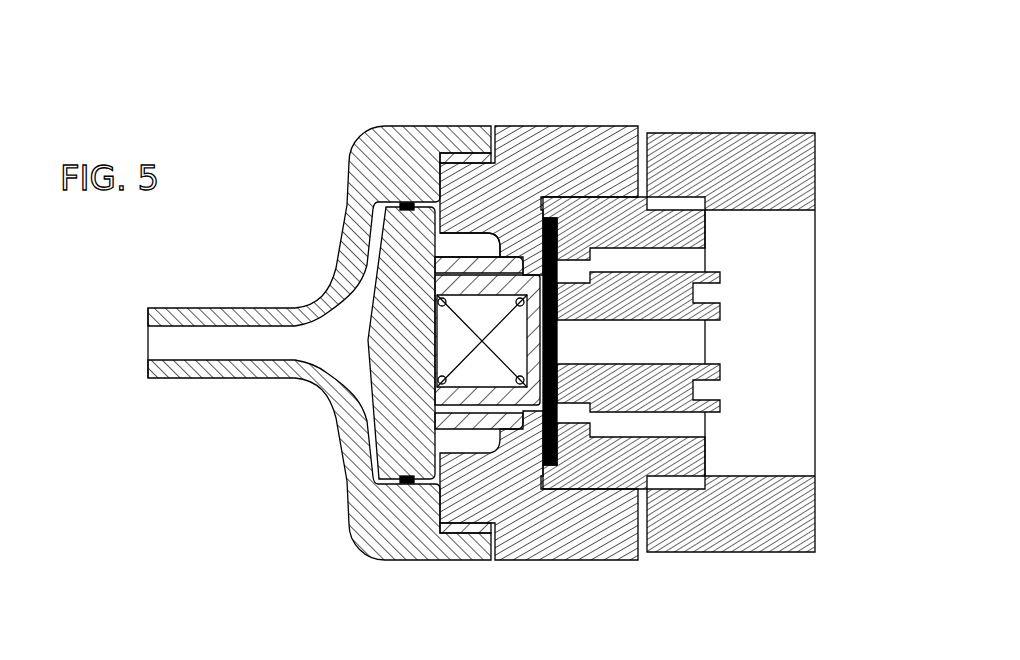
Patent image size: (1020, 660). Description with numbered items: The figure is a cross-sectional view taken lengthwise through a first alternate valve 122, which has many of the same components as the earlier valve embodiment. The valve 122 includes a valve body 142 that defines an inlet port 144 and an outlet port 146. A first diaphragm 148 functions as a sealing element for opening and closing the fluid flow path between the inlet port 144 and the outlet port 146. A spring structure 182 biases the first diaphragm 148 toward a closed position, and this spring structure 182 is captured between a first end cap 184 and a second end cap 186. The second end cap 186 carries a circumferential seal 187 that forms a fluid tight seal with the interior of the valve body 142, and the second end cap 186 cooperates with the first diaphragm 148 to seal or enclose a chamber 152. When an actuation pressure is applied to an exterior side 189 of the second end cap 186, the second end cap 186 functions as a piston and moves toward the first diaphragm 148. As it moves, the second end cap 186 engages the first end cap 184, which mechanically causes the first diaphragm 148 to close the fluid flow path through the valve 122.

The first alternate valve 122 is at (842, 113).
The valve body 142 is at (545, 127).
The inlet port 144 is at (673, 247).
The outlet port 146 is at (690, 325).
The first diaphragm 148 is at (553, 447).
The chamber 152 is at (461, 250).
The spring structure 182 is at (463, 362).
The first end cap 184 is at (472, 400).
The second end cap 186 is at (388, 437).
The circumferential seal 187 is at (404, 203).
The exterior side 189 is at (368, 327).